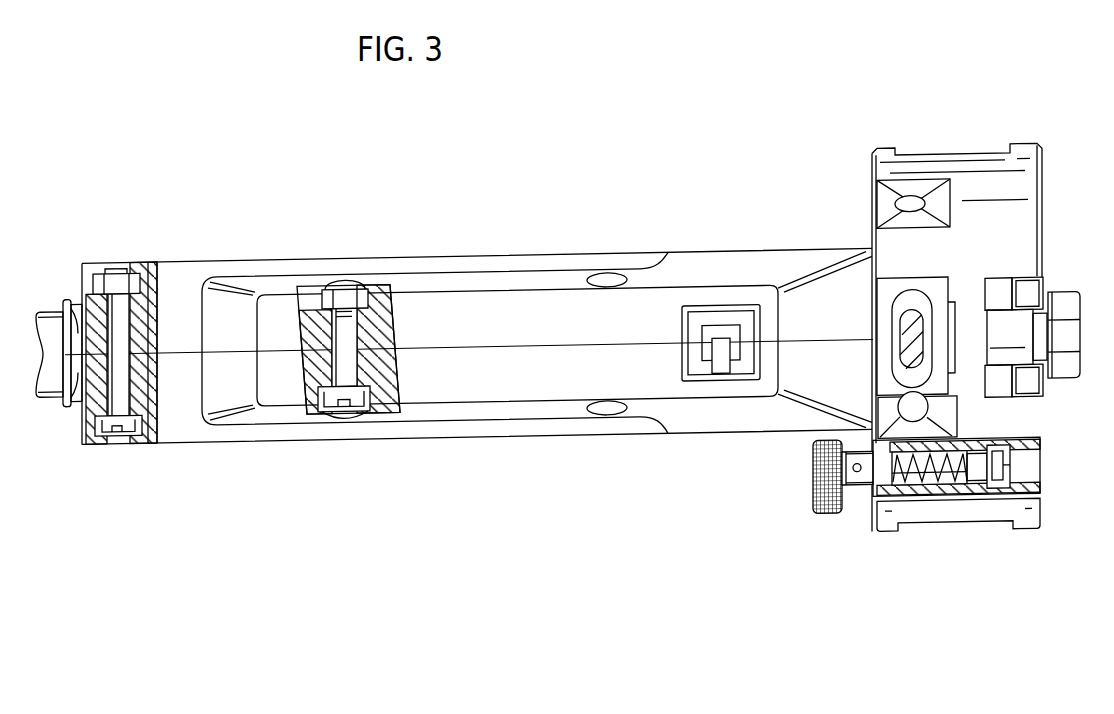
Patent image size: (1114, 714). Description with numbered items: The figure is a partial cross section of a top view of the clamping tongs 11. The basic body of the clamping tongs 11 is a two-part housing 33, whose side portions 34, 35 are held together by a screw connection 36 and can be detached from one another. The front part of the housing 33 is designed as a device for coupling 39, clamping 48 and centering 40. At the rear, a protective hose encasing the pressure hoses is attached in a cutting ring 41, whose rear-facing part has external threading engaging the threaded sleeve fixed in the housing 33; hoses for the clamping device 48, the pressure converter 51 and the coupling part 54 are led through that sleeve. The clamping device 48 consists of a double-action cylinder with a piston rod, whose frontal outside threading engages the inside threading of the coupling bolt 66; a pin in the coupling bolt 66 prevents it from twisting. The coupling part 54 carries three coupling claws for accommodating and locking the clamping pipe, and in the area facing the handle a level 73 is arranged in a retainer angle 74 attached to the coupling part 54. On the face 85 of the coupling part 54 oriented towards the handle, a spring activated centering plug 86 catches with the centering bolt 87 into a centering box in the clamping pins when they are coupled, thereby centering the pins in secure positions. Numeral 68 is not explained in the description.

The clamping tongs 11 is at (725, 139).
The housing 33 is at (190, 416).
The side portion 34 is at (188, 272).
The side portion 35 is at (742, 426).
The screw connection 36 is at (121, 418).
The device for coupling 39 is at (1049, 178).
The device for centering 40 is at (823, 513).
The cutting ring 41 is at (48, 388).
The clamping device 48 is at (1049, 349).
The pressure converter 51 is at (718, 374).
The coupling part 54 is at (988, 160).
The coupling bolt 66 is at (1018, 318).
The screw head 68 is at (1062, 340).
The level 73 is at (912, 300).
The retainer angle 74 is at (888, 381).
The face of the coupling part 85 is at (870, 505).
The centering plug 86 is at (833, 515).
The centering bolt 87 is at (997, 470).